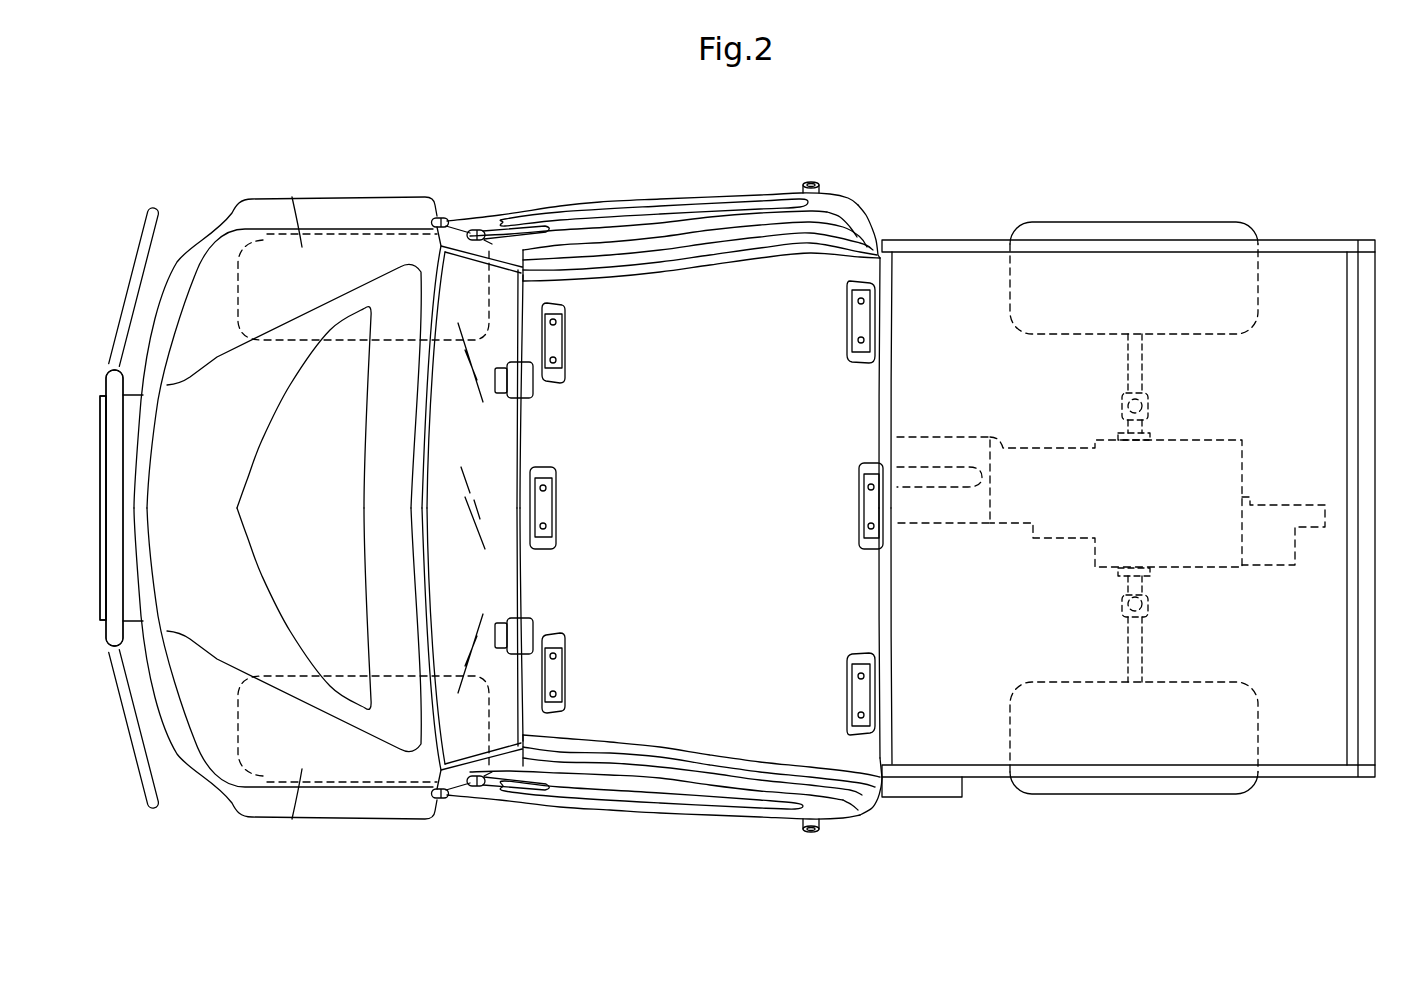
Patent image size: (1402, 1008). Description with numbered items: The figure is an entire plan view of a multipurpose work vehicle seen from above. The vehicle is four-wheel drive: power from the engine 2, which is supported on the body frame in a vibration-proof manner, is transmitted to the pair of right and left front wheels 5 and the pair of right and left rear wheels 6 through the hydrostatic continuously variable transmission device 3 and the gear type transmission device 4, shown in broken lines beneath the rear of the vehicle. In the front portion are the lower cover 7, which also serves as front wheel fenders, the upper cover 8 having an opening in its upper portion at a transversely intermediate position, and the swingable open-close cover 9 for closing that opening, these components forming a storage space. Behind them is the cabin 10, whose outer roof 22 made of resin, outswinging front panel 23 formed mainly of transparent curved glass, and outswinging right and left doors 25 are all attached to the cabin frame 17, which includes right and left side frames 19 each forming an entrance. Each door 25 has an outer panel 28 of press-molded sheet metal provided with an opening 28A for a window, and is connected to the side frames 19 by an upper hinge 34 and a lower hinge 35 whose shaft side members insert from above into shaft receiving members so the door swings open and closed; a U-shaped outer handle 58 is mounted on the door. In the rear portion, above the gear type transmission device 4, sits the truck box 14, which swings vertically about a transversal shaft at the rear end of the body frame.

The engine 2 is at (952, 527).
The hydrostatic continuously variable transmission device 3 is at (1290, 500).
The gear type transmission device 4 is at (1212, 572).
The front wheels 5 is at (228, 761).
The rear wheels 6 is at (1133, 796).
The lower cover 7 is at (257, 205).
The upper cover 8 is at (292, 197).
The open-close cover 9 is at (215, 378).
The cabin 10 is at (866, 174).
The truck box 14 is at (1289, 239).
The cabin frame 17 is at (873, 203).
The side frames 19 is at (870, 806).
The outer roof 22 is at (882, 390).
The front panel 23 is at (440, 515).
The doors 25 is at (550, 203).
The outer panel 28 is at (614, 811).
The opening for window 28A is at (687, 205).
The upper hinge 34 is at (472, 790).
The lower hinge 35 is at (436, 213).
The outer handle 58 is at (811, 833).